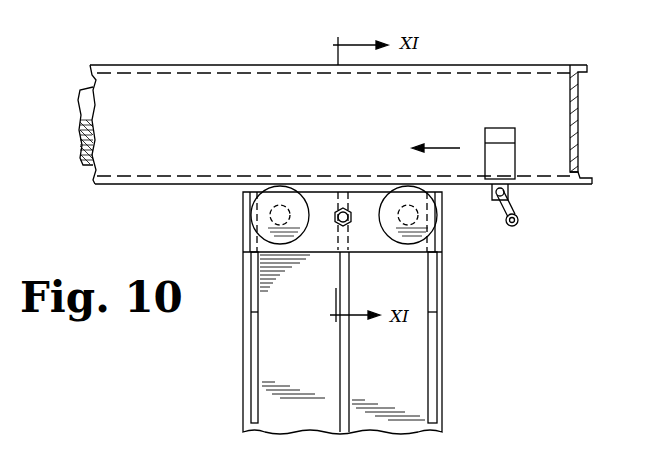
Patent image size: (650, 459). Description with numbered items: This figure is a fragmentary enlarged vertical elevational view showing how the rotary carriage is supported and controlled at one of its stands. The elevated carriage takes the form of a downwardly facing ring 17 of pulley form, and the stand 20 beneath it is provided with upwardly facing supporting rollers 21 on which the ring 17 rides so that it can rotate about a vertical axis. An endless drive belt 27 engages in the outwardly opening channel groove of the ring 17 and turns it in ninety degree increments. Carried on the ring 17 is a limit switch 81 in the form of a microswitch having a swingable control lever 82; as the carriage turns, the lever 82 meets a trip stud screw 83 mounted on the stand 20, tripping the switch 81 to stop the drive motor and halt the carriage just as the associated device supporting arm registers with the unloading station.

The carriage ring 17 is at (515, 85).
The endless drive belt 27 is at (579, 143).
The limit switch 81 is at (516, 162).
The swingable control lever 82 is at (514, 204).
The trip stud screw 83 is at (343, 208).
The supporting rollers 21 is at (263, 230).
The stand 20 is at (446, 369).